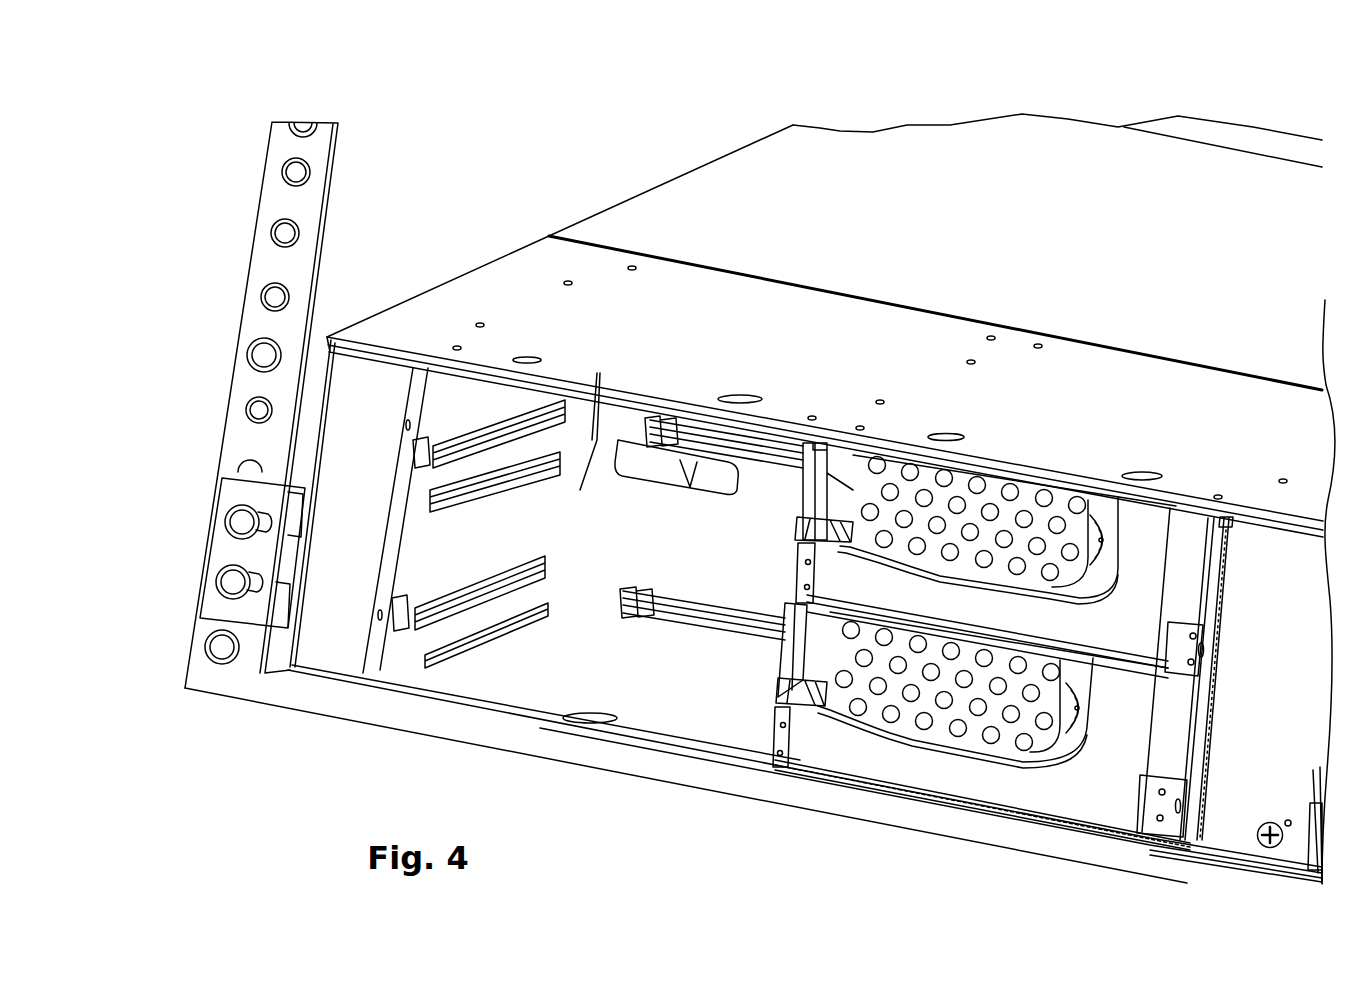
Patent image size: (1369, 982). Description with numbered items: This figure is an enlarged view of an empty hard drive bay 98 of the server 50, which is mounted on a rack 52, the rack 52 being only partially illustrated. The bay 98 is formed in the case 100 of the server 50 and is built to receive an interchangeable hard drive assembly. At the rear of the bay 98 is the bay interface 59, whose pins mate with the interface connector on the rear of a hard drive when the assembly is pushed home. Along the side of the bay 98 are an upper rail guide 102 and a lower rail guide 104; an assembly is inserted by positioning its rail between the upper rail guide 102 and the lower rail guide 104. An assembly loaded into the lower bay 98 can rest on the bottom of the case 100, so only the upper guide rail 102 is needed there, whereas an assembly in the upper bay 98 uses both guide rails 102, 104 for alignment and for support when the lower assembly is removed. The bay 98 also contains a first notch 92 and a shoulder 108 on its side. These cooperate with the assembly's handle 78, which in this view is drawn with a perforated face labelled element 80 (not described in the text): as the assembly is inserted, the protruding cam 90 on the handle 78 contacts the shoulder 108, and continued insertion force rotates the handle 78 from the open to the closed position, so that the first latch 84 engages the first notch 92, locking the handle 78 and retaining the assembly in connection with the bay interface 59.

The server 50 is at (437, 198).
The rack 52 is at (258, 282).
The interface 59 is at (688, 592).
The handle 78 is at (1150, 540).
The perforated carrier faceplate 80 is at (1008, 508).
The first latch 84 is at (849, 478).
The cam 90 is at (1210, 581).
The first notch 92 is at (413, 445).
The hard drive bay 98 is at (668, 722).
The case 100 is at (522, 280).
The upper rail guide 102 is at (480, 433).
The lower rail guide 104 is at (447, 510).
The shoulder 108 is at (787, 658).